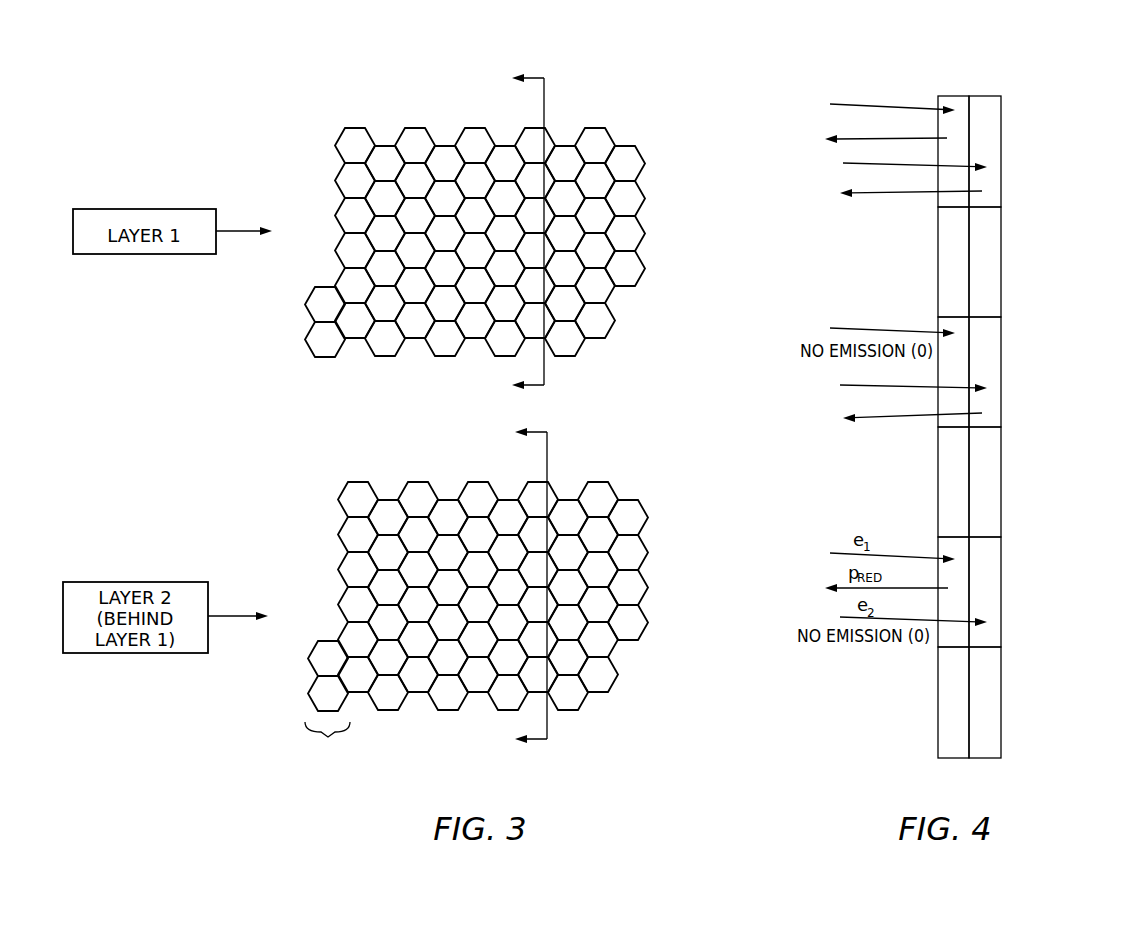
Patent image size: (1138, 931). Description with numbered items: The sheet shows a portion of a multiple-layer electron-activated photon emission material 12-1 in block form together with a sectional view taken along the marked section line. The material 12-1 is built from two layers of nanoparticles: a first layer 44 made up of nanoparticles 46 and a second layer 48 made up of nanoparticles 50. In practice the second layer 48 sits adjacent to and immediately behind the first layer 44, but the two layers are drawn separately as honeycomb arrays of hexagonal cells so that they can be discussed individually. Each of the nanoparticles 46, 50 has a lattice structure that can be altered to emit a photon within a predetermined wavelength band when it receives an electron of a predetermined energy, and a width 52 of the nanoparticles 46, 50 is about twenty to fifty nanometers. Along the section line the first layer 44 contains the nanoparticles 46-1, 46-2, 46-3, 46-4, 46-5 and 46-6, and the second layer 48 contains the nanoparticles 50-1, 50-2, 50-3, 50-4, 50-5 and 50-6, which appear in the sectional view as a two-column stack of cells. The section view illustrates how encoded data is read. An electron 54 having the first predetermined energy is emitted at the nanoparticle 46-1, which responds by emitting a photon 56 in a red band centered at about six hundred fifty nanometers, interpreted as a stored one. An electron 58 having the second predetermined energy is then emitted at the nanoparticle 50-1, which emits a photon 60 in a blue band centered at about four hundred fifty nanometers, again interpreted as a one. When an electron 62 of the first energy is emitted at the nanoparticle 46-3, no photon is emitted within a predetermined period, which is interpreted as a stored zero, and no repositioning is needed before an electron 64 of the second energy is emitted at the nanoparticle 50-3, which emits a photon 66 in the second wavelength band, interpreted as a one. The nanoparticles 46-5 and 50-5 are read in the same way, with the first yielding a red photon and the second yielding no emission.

In FIG. 3, the multiple-layer electron-activated photon emission material 12-1 is at (284, 70).
In FIG. 3, the first layer 44 is at (645, 90).
In FIG. 4, the first layer 44 is at (956, 72).
In FIG. 3, the second layer 48 is at (648, 444).
In FIG. 4, the second layer 48 is at (976, 72).
In FIG. 3, the nanoparticles 46 is at (480, 128).
In FIG. 3, the nanoparticles 50 is at (483, 482).
In FIG. 3, the width 52 is at (302, 368).
In FIG. 3, the nanoparticle 46-1 is at (548, 134).
In FIG. 4, the nanoparticle 46-1 is at (942, 100).
In FIG. 3, the nanoparticle 46-2 is at (550, 172).
In FIG. 4, the nanoparticle 46-2 is at (944, 232).
In FIG. 3, the nanoparticle 46-3 is at (552, 209).
In FIG. 4, the nanoparticle 46-3 is at (944, 322).
In FIG. 3, the nanoparticle 46-4 is at (550, 258).
In FIG. 4, the nanoparticle 46-4 is at (950, 445).
In FIG. 3, the nanoparticle 46-5 is at (550, 293).
In FIG. 4, the nanoparticle 46-5 is at (946, 543).
In FIG. 3, the nanoparticle 46-6 is at (550, 331).
In FIG. 4, the nanoparticle 46-6 is at (946, 728).
In FIG. 3, the nanoparticle 50-1 is at (551, 488).
In FIG. 4, the nanoparticle 50-1 is at (1001, 110).
In FIG. 3, the nanoparticle 50-2 is at (553, 526).
In FIG. 4, the nanoparticle 50-2 is at (1001, 218).
In FIG. 3, the nanoparticle 50-3 is at (555, 563).
In FIG. 4, the nanoparticle 50-3 is at (1001, 325).
In FIG. 3, the nanoparticle 50-4 is at (553, 612).
In FIG. 4, the nanoparticle 50-4 is at (1001, 437).
In FIG. 3, the nanoparticle 50-5 is at (553, 647).
In FIG. 4, the nanoparticle 50-5 is at (1001, 548).
In FIG. 3, the nanoparticle 50-6 is at (553, 685).
In FIG. 4, the nanoparticle 50-6 is at (1001, 727).
In FIG. 4, the electron 54 is at (840, 104).
In FIG. 4, the photon 56 is at (840, 137).
In FIG. 4, the electron 58 is at (845, 162).
In FIG. 4, the photon 60 is at (858, 197).
In FIG. 4, the electron 62 is at (843, 328).
In FIG. 4, the electron 64 is at (848, 387).
In FIG. 4, the photon 66 is at (862, 420).